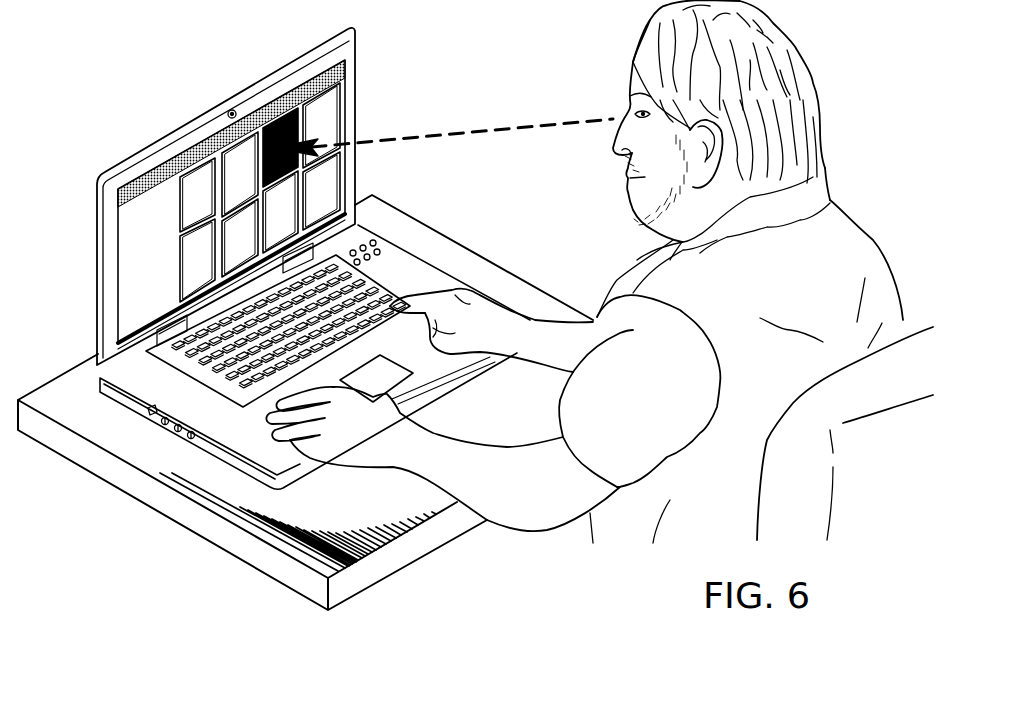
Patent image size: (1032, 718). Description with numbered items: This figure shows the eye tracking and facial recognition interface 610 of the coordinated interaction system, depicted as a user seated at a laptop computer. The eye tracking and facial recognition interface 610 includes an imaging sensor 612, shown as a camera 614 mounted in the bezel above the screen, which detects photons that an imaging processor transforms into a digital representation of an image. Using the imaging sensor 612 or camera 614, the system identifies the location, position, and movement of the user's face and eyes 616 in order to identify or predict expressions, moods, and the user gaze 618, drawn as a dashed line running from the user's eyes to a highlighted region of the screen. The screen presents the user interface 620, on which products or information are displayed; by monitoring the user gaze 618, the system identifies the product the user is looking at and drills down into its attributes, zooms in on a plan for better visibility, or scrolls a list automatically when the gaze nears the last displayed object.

The eye tracking and facial recognition interface 610 is at (309, 245).
The imaging sensor 612 is at (226, 185).
The camera 614 is at (224, 124).
The user's face and eyes 616 is at (633, 112).
The user gaze 618 is at (470, 131).
The user interface 620 is at (281, 134).